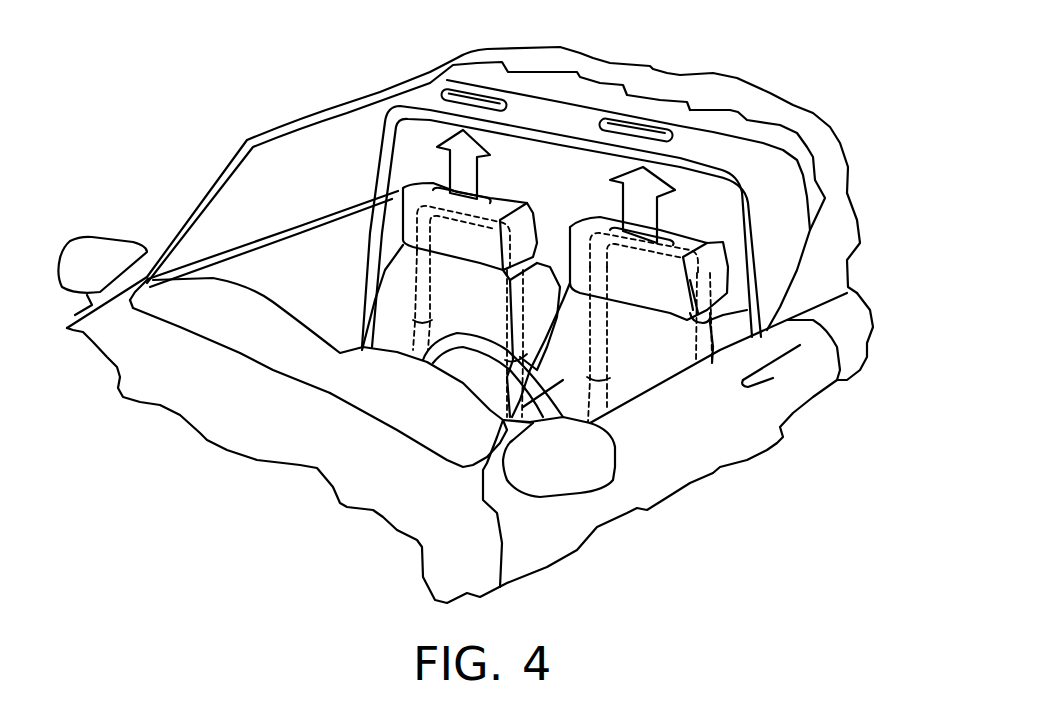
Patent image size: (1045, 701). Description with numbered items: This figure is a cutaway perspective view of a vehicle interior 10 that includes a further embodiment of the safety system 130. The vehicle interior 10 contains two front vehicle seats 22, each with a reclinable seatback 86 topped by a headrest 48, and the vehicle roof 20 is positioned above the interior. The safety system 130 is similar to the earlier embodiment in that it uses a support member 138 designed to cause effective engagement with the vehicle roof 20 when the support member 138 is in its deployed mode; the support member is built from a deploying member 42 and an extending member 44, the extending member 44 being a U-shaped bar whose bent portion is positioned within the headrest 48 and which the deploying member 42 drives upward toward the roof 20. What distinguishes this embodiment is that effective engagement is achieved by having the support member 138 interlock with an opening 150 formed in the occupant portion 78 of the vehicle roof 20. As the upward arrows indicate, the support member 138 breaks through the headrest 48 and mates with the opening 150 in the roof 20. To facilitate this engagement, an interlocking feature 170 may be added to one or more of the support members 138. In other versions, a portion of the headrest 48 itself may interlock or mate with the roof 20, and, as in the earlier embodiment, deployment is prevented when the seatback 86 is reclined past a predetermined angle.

The vehicle interior 10 is at (340, 260).
The vehicle roof 20 is at (492, 75).
The front vehicle seats 22 is at (486, 316).
The deploying member 42 is at (420, 347).
The extending member 44 is at (408, 210).
The headrest 48 is at (517, 222).
The occupant portion 78 is at (717, 143).
The seatback 86 is at (562, 317).
The safety system 130 is at (823, 170).
The support member 138 is at (600, 393).
The opening 150 is at (517, 97).
The interlocking feature 170 is at (412, 200).